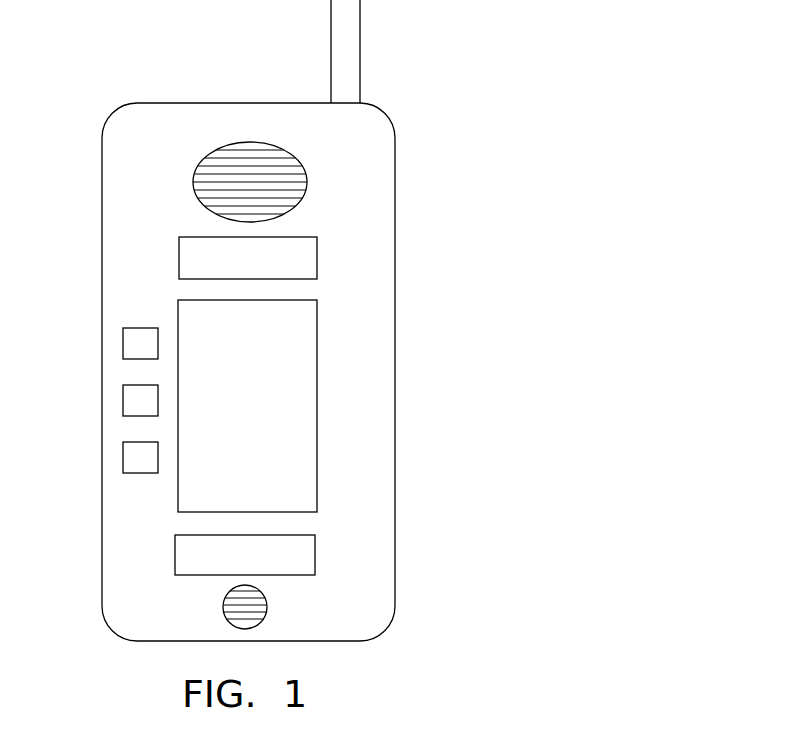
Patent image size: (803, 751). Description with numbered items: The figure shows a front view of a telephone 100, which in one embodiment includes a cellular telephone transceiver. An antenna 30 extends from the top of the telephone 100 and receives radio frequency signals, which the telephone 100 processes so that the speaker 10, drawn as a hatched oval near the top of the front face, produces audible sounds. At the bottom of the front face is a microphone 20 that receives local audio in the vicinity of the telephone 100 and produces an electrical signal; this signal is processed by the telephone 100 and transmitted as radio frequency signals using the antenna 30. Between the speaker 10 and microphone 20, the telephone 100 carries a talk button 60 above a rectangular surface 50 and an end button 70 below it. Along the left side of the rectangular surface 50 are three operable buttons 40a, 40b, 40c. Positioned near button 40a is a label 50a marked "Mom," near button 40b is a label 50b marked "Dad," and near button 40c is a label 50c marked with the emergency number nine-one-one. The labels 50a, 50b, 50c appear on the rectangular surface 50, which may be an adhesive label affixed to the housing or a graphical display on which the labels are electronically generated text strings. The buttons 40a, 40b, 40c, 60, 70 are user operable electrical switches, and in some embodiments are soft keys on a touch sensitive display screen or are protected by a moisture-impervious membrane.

The telephone 100 is at (251, 103).
The antenna 30 is at (360, 29).
The speaker 10 is at (222, 171).
The talk button 60 is at (193, 259).
The rectangular surface 50 is at (319, 393).
The label 50a is at (275, 344).
The label 50b is at (275, 400).
The label 50c is at (275, 457).
The button 40a is at (138, 344).
The button 40b is at (138, 401).
The button 40c is at (138, 456).
The end button 70 is at (190, 553).
The microphone 20 is at (243, 605).